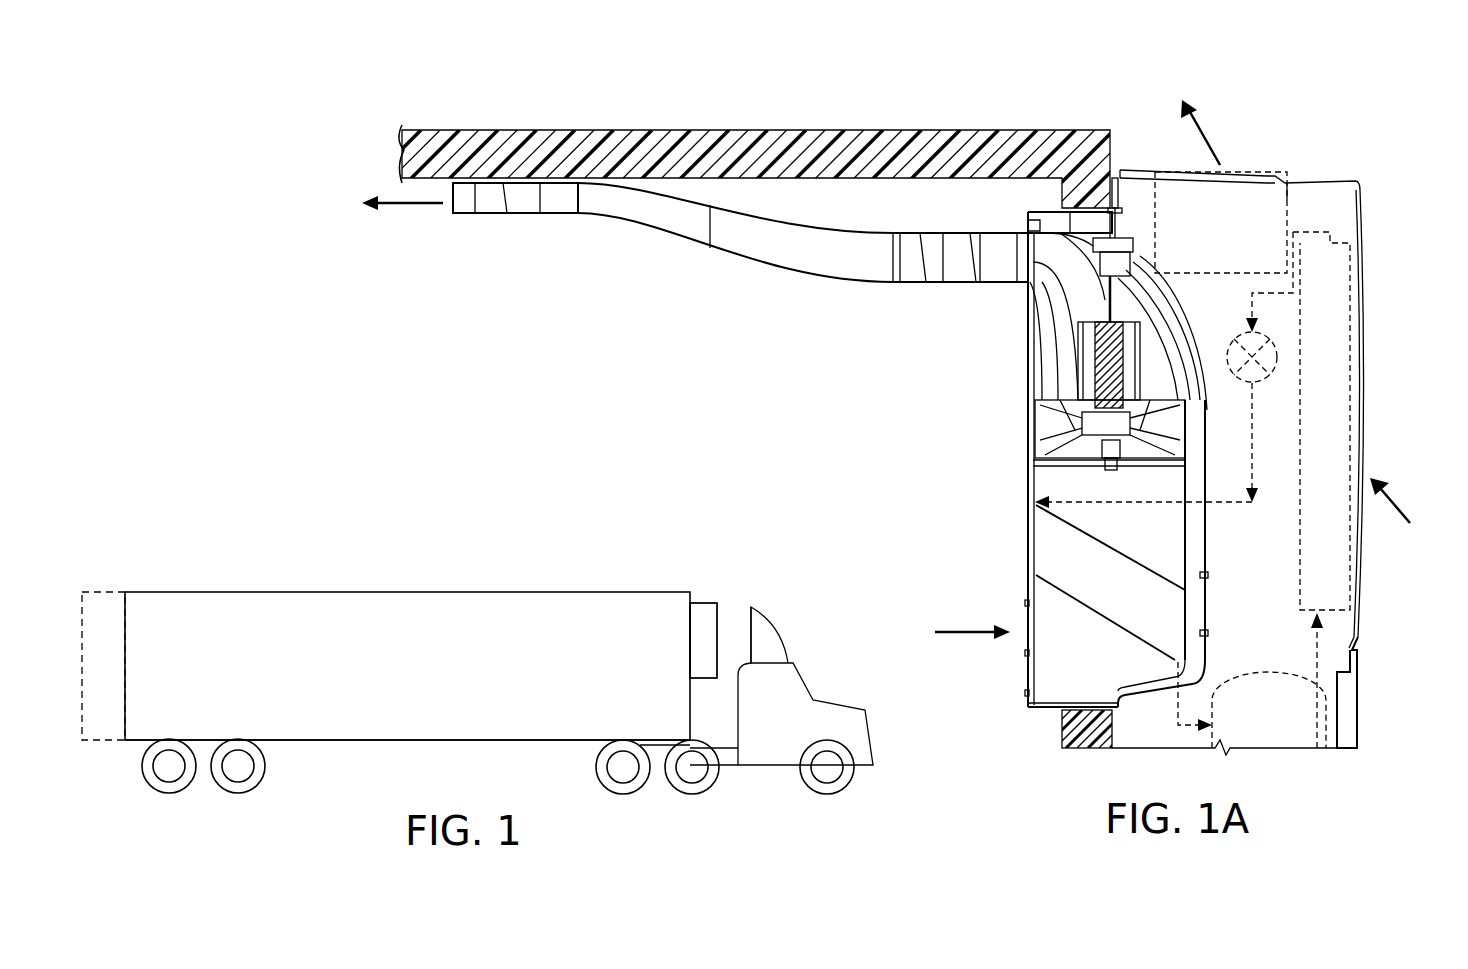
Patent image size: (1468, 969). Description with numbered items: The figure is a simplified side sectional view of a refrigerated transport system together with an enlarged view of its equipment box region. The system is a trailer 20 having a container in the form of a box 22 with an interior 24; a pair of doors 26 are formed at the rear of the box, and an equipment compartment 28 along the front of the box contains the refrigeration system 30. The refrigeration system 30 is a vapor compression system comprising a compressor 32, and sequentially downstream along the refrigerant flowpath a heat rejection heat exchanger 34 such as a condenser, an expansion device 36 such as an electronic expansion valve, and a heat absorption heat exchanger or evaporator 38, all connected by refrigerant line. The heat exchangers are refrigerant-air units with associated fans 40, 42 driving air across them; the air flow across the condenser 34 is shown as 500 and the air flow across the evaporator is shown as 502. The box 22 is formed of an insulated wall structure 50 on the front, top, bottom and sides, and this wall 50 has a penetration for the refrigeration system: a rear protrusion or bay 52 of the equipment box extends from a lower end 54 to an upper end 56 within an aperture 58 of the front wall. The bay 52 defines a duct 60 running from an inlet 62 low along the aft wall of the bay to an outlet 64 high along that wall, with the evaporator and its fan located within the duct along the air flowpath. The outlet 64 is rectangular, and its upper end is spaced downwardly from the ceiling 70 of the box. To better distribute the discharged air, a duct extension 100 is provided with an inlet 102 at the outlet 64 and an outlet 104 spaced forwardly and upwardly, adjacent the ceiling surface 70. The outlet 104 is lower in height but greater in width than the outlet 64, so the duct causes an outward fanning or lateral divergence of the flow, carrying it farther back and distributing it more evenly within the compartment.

In FIG. 1, the trailer 20 is at (626, 560).
In FIG. 1, the box 22 is at (398, 592).
In FIG. 1, the interior 24 is at (459, 677).
In FIG. 1, the doors 26 is at (100, 592).
In FIG. 1, the equipment compartment 28 is at (724, 598).
In FIG. 1, the refrigeration system 30 is at (706, 635).
In FIG. 1A, the compressor 32 is at (1302, 712).
In FIG. 1A, the heat rejection heat exchanger 34 is at (1335, 392).
In FIG. 1A, the expansion device 36 is at (1282, 345).
In FIG. 1A, the heat absorption heat exchanger 38 is at (1024, 536).
In FIG. 1A, the fan 40 is at (1290, 215).
In FIG. 1A, the fan 42 is at (1026, 426).
In FIG. 1A, the insulated wall structure 50 is at (648, 118).
In FIG. 1A, the bay 52 is at (1045, 732).
In FIG. 1A, the lower end 54 is at (1043, 712).
In FIG. 1A, the upper end 56 is at (1078, 242).
In FIG. 1A, the aperture 58 is at (1118, 228).
In FIG. 1A, the duct 60 is at (1024, 470).
In FIG. 1A, the inlet 62 is at (1018, 640).
In FIG. 1A, the outlet 64 is at (1020, 255).
In FIG. 1A, the ceiling 70 is at (860, 182).
In FIG. 1A, the duct extension 100 is at (708, 290).
In FIG. 1A, the inlet 102 is at (1080, 215).
In FIG. 1A, the outlet 104 is at (445, 192).
In FIG. 1A, the air flow 500 is at (1215, 147).
In FIG. 1A, the air flow 502 is at (420, 205).